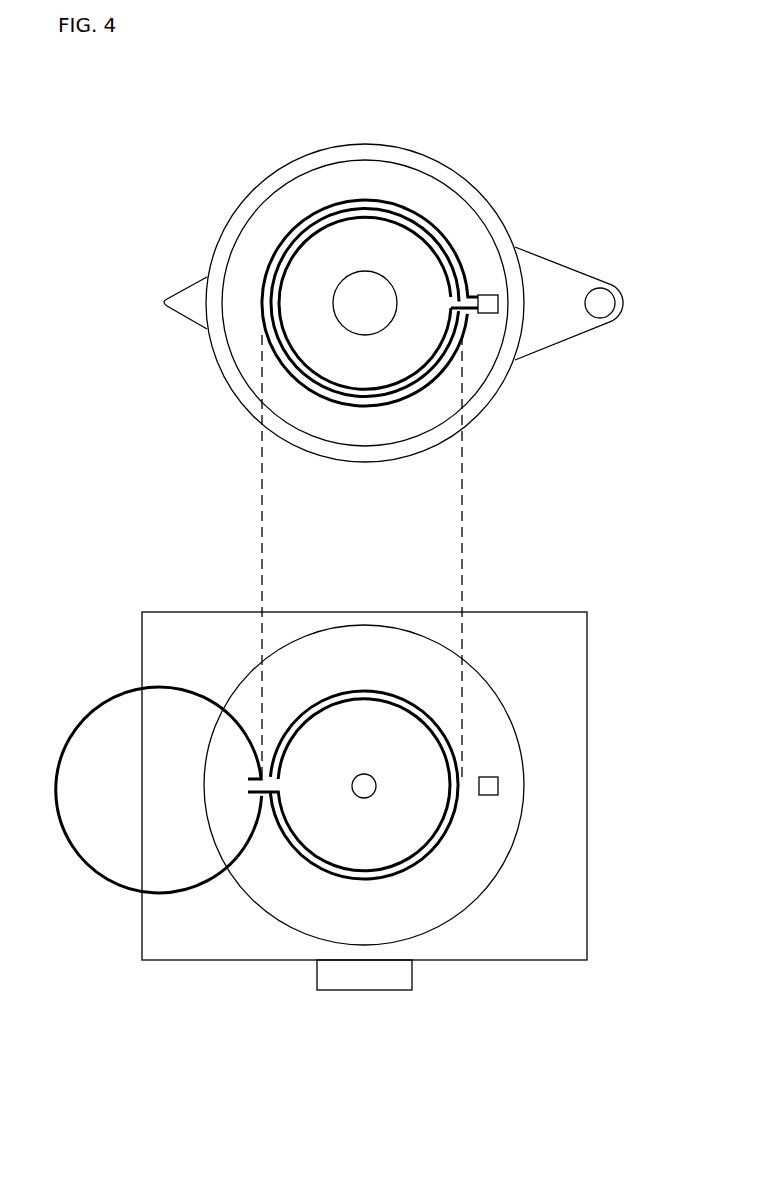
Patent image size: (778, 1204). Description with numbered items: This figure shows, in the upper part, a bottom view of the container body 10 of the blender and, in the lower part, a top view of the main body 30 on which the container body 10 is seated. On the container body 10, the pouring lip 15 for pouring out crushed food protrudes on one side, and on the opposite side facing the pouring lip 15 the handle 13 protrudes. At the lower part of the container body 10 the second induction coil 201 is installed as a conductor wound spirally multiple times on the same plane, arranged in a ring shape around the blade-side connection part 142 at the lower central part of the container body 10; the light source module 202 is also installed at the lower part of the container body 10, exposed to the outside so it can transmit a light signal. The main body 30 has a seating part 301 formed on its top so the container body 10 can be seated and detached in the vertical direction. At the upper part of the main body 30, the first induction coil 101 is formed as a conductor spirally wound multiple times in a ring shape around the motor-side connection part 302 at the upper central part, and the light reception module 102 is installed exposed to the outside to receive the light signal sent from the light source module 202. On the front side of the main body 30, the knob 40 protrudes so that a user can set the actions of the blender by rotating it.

The container body 10 is at (420, 134).
The handle 13 is at (640, 298).
The pouring lip 15 is at (177, 300).
The blade-side connection part 142 is at (343, 282).
The second induction coil 201 is at (440, 220).
The light source module 202 is at (487, 295).
The main body 30 is at (608, 771).
The seating part 301 is at (243, 892).
The motor-side connection part 302 is at (352, 787).
The first induction coil 101 is at (457, 835).
The light reception module 102 is at (499, 787).
The knob 40 is at (358, 990).